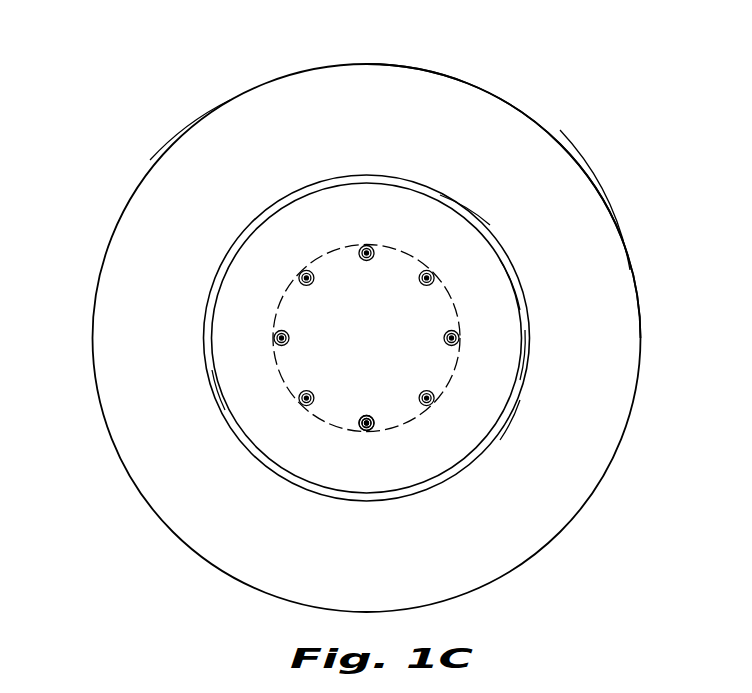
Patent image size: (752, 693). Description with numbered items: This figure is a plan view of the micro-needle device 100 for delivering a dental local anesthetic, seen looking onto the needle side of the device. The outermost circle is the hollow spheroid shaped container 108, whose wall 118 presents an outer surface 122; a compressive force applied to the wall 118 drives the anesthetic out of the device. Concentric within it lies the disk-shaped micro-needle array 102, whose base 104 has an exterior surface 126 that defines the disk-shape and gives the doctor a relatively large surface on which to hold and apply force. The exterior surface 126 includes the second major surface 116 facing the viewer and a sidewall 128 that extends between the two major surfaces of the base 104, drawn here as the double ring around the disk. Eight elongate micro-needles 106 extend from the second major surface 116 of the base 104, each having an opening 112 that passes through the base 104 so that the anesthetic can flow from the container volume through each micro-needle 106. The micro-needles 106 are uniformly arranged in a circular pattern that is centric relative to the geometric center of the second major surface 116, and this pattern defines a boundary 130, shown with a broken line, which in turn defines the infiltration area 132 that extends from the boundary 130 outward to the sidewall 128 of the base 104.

The micro-needle device 100 is at (583, 57).
The micro-needle array 102 is at (208, 293).
The base 104 is at (463, 245).
The elongate micro-needle 106 is at (367, 247).
The hollow spheroid shaped container 108 is at (550, 130).
The opening 112 is at (367, 431).
The second major surface 116 is at (503, 357).
The wall 118 is at (587, 208).
The outer surface 122 is at (187, 130).
The exterior surface 126 is at (502, 430).
The sidewall 128 is at (223, 397).
The boundary 130 is at (315, 257).
The infiltration area 132 is at (487, 292).